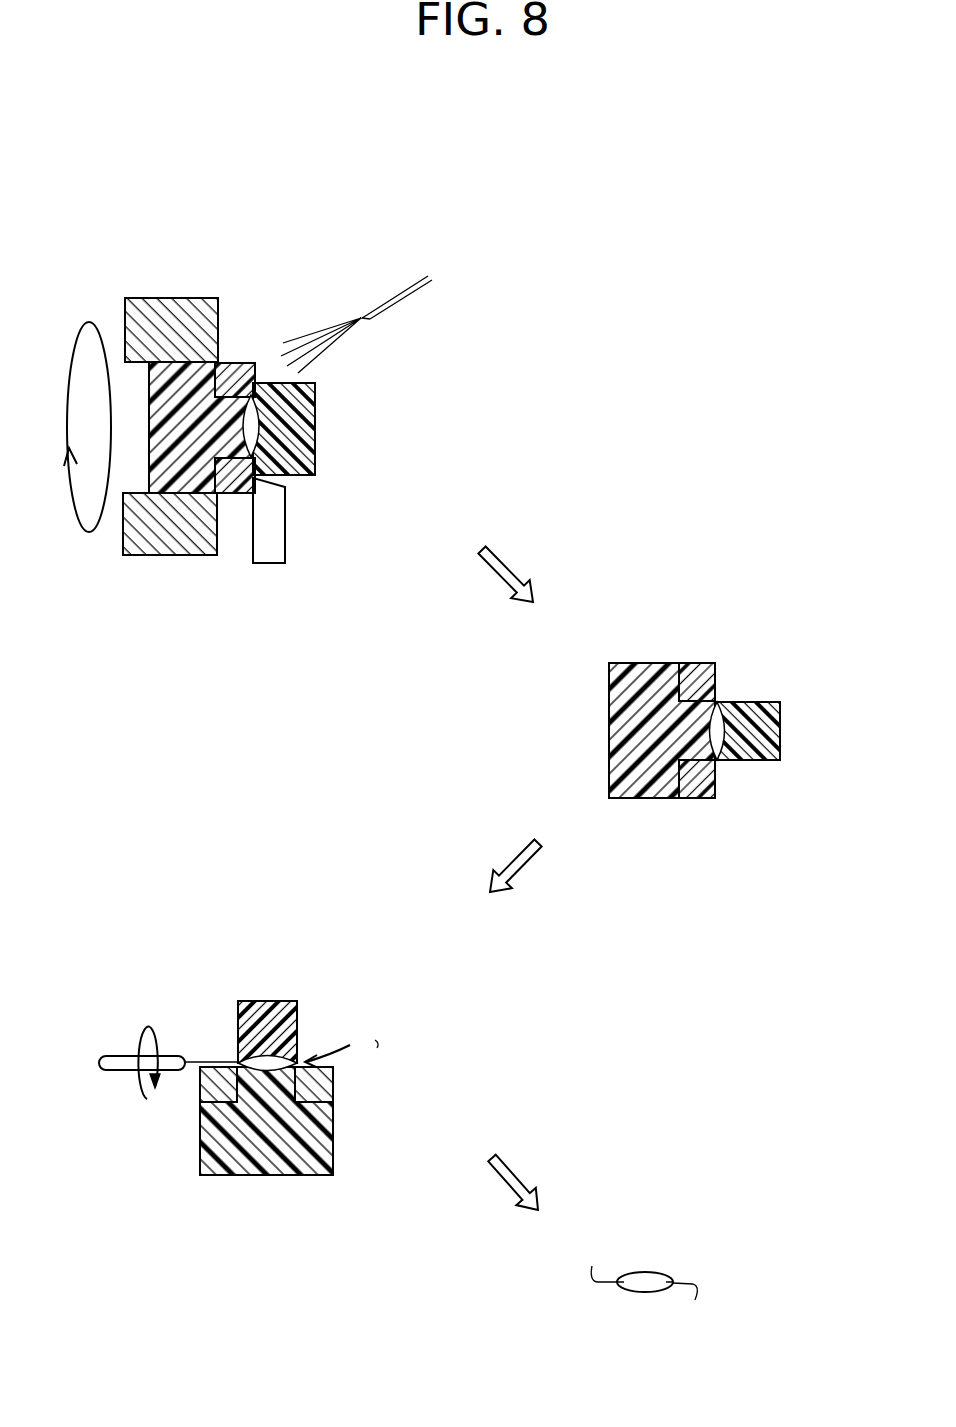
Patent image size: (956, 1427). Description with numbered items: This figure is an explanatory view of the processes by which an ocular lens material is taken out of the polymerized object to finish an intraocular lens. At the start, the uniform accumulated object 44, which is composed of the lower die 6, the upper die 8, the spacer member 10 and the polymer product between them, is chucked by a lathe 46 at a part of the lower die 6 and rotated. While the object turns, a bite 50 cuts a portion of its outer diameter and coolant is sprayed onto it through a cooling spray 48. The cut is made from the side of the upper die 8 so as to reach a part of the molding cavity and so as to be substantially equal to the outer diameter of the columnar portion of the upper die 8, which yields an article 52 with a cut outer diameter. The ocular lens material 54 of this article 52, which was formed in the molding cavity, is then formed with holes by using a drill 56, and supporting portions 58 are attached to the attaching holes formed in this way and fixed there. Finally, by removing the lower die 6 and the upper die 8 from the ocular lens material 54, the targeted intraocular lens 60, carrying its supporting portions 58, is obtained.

The lower die 6 is at (188, 475).
The upper die 8 is at (300, 457).
The spacer member 10 is at (243, 362).
The accumulated object 44 is at (340, 438).
The lathe 46 is at (167, 310).
The cooling spray 48 is at (404, 290).
The bite 50 is at (270, 513).
The article with a cut outer diameter 52 is at (790, 700).
The ocular lens material 54 is at (255, 422).
The drill 56 is at (122, 1062).
The supporting portions 58 is at (375, 1040).
The intraocular lens 60 is at (655, 1262).